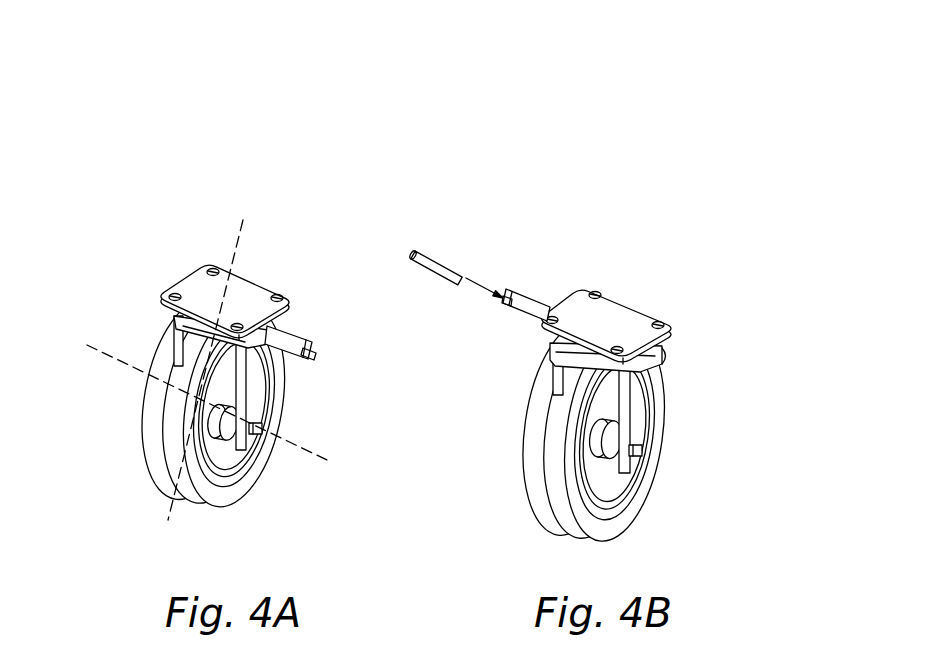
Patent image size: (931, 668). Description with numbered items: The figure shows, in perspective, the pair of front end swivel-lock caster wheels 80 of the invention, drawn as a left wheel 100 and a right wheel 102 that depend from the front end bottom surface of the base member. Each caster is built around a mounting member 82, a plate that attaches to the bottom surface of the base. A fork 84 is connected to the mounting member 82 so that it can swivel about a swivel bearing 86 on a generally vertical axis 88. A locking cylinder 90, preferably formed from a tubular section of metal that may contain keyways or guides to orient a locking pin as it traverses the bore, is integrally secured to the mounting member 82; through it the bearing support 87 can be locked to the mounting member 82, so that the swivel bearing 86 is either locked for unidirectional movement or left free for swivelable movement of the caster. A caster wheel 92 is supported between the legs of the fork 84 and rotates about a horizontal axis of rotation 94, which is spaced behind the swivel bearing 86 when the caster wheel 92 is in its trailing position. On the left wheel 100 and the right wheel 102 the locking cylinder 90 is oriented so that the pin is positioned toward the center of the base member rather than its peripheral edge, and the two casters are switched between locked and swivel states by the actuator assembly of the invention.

In FIG. 4A, the front end swivel-lock caster wheels 80 is at (340, 158).
In FIG. 4B, the front end swivel-lock caster wheels 80 is at (643, 170).
In FIG. 4A, the mounting member 82 is at (262, 292).
In FIG. 4B, the mounting member 82 is at (618, 312).
In FIG. 4A, the fork 84 is at (242, 389).
In FIG. 4B, the fork 84 is at (635, 395).
In FIG. 4A, the swivel bearing 86 is at (180, 320).
In FIG. 4B, the swivel bearing 86 is at (662, 352).
In FIG. 4B, the bearing support 87 is at (645, 363).
In FIG. 4A, the vertical axis 88 is at (238, 240).
In FIG. 4A, the locking cylinder 90 is at (291, 338).
In FIG. 4B, the locking cylinder 90 is at (515, 294).
In FIG. 4A, the caster wheel 92 is at (232, 488).
In FIG. 4B, the caster wheel 92 is at (658, 453).
In FIG. 4A, the horizontal axis of rotation 94 is at (283, 441).
In FIG. 4A, the left wheel 100 is at (130, 217).
In FIG. 4B, the right wheel 102 is at (530, 226).